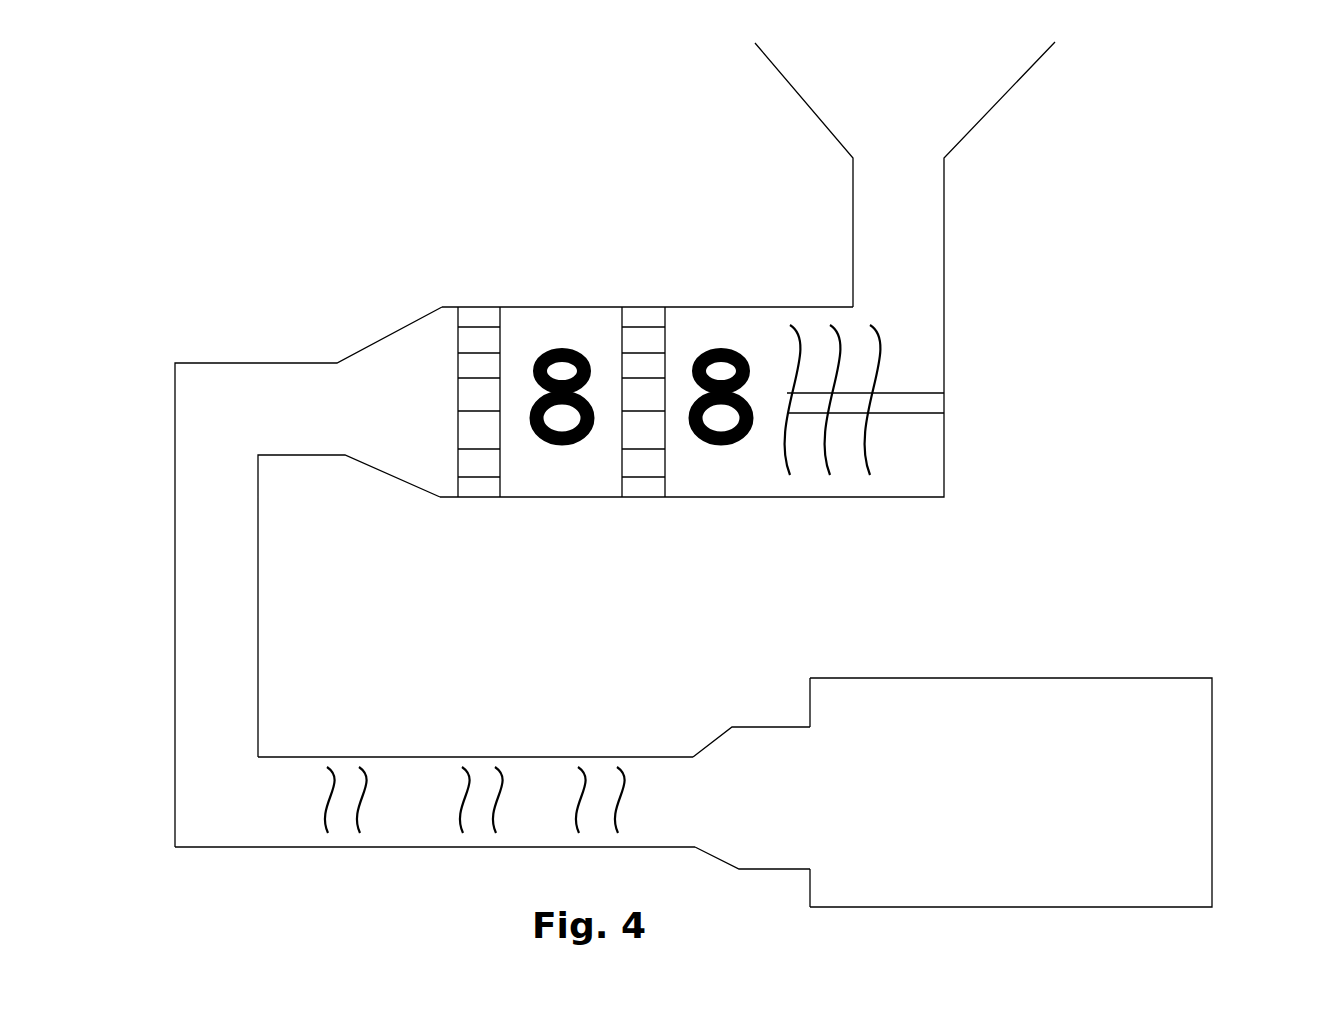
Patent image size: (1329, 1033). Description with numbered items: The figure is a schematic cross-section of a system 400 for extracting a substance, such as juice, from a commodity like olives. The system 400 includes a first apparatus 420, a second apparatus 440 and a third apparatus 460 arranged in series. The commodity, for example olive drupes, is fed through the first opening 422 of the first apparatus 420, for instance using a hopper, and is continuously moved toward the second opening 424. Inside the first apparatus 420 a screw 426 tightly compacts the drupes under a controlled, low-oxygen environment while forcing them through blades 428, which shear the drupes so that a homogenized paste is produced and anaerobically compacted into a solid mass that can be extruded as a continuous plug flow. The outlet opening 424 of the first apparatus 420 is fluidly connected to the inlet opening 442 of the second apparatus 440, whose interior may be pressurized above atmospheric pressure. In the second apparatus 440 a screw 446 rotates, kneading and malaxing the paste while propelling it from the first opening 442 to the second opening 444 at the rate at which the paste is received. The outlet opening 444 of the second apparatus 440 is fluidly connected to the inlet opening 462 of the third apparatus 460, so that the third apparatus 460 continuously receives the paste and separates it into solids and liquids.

The system 400 is at (1174, 43).
The first apparatus 420 is at (550, 307).
The first opening of the first apparatus 422 is at (945, 160).
The second opening of the first apparatus 424 is at (335, 362).
The screw 426 is at (888, 355).
The blades 428 is at (587, 450).
The second apparatus 440 is at (418, 757).
The first opening of the second apparatus 442 is at (257, 848).
The second opening of the second apparatus 444 is at (693, 755).
The screw 446 is at (360, 833).
The third apparatus 460 is at (1188, 677).
The first opening of the third apparatus 462 is at (800, 727).